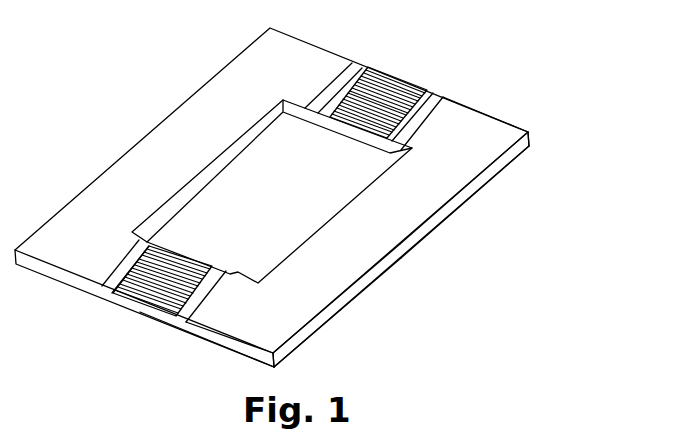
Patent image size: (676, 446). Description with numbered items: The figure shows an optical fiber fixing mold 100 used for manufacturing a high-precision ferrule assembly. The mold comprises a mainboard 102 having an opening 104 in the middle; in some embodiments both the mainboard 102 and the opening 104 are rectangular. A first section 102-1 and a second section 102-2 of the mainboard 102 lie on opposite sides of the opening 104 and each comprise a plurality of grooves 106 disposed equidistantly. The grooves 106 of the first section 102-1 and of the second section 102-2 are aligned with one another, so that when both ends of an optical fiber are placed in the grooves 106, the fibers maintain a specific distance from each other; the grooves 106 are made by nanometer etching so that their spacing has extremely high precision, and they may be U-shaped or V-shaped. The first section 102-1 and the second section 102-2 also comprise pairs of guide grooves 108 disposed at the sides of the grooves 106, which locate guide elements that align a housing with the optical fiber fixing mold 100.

The optical fiber fixing mold 100 is at (300, 191).
The mainboard 102 is at (300, 197).
The first section 102-1 is at (479, 117).
The second section 102-2 is at (222, 316).
The opening 104 is at (257, 193).
The grooves 106 is at (396, 76).
The guide grooves 108 is at (146, 249).